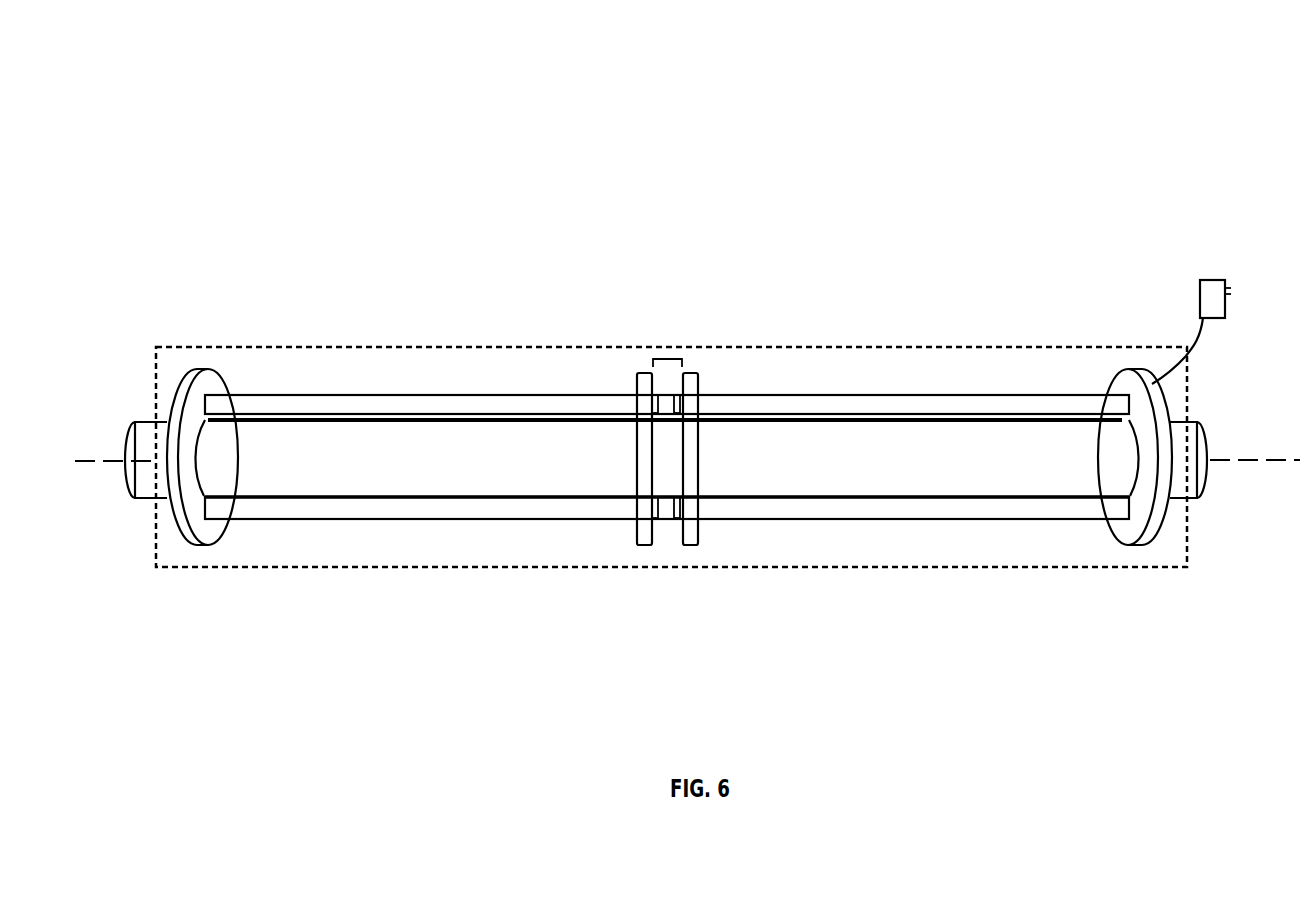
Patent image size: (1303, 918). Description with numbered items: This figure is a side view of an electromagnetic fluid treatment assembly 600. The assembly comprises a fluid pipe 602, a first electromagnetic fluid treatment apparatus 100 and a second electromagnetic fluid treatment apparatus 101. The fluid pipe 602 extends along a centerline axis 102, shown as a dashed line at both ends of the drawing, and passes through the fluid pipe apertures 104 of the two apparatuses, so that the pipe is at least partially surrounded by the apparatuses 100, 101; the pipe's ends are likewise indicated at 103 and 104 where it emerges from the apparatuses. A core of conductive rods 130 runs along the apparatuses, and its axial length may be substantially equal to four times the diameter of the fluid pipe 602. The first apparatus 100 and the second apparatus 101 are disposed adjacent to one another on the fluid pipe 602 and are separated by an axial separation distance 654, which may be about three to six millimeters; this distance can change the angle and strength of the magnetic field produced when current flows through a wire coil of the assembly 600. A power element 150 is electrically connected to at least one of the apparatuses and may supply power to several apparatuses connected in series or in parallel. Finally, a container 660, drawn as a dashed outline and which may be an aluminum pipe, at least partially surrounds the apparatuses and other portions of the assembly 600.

The electromagnetic fluid treatment assembly 600 is at (289, 116).
The container 660 is at (477, 568).
The fluid pipe 602 is at (150, 421).
The centerline axis 102 is at (1238, 462).
The first end of tube 103 is at (200, 473).
The fluid pipe aperture 104 is at (1135, 472).
The second electromagnetic fluid treatment apparatus 101 is at (1089, 364).
The first electromagnetic fluid treatment apparatus 100 is at (622, 366).
The core of conductive rods 130 is at (448, 403).
The axial separation distance 654 is at (667, 359).
The power element 150 is at (1202, 280).